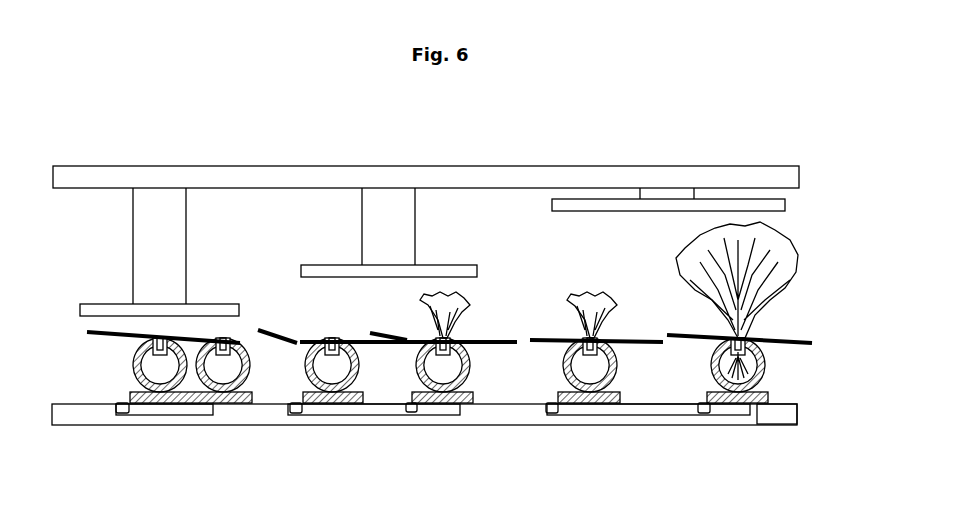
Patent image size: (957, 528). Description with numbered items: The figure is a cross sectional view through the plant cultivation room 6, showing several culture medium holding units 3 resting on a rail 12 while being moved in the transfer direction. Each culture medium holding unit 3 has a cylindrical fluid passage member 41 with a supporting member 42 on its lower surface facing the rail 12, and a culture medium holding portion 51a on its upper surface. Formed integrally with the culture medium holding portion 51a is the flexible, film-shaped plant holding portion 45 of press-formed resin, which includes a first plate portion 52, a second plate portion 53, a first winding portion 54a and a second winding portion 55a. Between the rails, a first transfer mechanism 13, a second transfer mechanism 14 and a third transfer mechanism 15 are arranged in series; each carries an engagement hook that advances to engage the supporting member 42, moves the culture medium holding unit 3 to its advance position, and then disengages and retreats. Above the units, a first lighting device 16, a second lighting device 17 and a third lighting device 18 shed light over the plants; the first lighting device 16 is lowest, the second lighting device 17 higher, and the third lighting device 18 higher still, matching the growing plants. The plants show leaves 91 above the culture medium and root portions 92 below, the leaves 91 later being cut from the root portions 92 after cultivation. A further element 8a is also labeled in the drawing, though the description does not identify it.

The culture medium holding unit 3 is at (168, 404).
The plant cultivation room 6 is at (778, 133).
The light 8a is at (162, 320).
The rail 12 is at (505, 425).
The first transfer mechanism 13 is at (127, 415).
The second transfer mechanism 14 is at (380, 415).
The third transfer mechanism 15 is at (558, 415).
The first lighting device 16 is at (217, 304).
The second lighting device 17 is at (459, 265).
The third lighting device 18 is at (722, 199).
The cylindrical fluid passage member 41 is at (133, 366).
The supporting member 42 is at (130, 393).
The plant holding portion 45 is at (778, 335).
The culture medium holding portion 51a is at (765, 358).
The first plate portion 52 is at (796, 339).
The second plate portion 53 is at (694, 340).
The first winding portion 54a is at (768, 398).
The second winding portion 55a is at (710, 386).
The leaves 91 is at (782, 243).
The root portions 92 is at (762, 376).